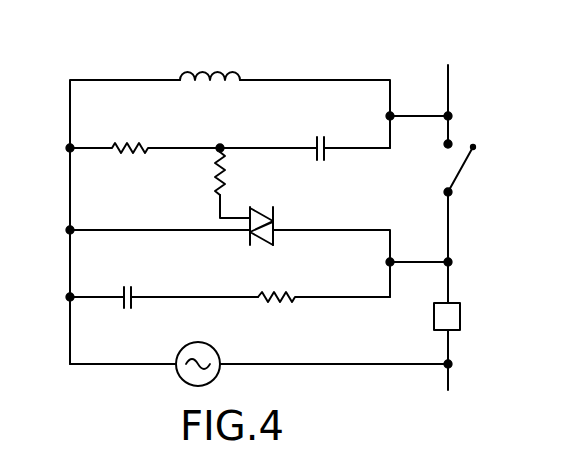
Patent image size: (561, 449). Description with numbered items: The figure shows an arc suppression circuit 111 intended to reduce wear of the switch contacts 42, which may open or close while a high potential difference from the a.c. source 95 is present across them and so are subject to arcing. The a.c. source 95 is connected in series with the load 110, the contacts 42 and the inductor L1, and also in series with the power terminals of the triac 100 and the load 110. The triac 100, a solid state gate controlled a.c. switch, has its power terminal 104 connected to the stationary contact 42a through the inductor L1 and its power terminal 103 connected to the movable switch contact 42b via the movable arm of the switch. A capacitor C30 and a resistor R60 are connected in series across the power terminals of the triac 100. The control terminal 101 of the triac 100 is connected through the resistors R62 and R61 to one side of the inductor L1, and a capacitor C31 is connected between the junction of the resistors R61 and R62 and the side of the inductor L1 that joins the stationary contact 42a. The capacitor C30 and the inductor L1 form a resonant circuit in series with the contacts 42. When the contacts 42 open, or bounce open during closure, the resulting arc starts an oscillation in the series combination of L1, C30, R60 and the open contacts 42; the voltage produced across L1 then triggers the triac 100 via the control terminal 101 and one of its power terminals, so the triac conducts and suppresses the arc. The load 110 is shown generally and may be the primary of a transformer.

The arc suppression circuit 111 is at (52, 62).
The inductor L1 is at (228, 75).
The resistor R61 is at (140, 141).
The capacitor C31 is at (324, 138).
The resistor R62 is at (217, 176).
The control terminal 101 is at (240, 214).
The triac 100 is at (255, 208).
The power terminal 104 is at (250, 232).
The power terminal 103 is at (275, 232).
The capacitor C30 is at (129, 286).
The resistor R60 is at (282, 302).
The a.c. source 95 is at (184, 348).
The switch contacts 42 is at (469, 130).
The stationary contact 42a is at (422, 157).
The movable switch contact 42b is at (476, 146).
The load 110 is at (456, 312).